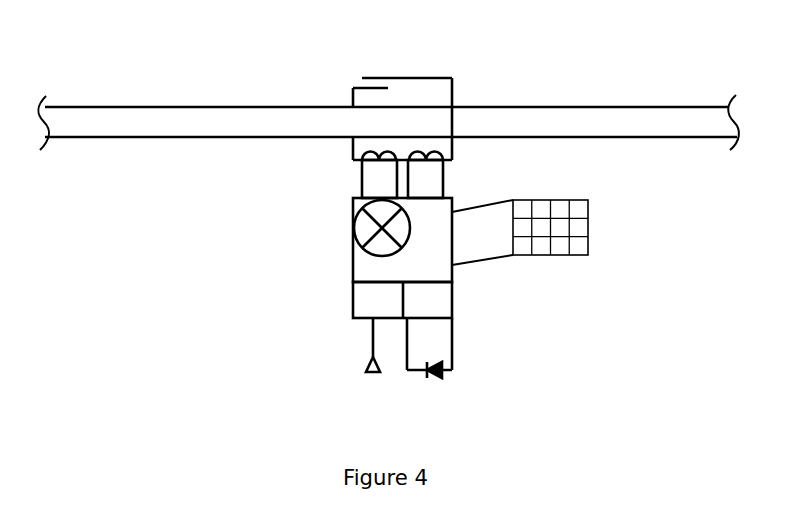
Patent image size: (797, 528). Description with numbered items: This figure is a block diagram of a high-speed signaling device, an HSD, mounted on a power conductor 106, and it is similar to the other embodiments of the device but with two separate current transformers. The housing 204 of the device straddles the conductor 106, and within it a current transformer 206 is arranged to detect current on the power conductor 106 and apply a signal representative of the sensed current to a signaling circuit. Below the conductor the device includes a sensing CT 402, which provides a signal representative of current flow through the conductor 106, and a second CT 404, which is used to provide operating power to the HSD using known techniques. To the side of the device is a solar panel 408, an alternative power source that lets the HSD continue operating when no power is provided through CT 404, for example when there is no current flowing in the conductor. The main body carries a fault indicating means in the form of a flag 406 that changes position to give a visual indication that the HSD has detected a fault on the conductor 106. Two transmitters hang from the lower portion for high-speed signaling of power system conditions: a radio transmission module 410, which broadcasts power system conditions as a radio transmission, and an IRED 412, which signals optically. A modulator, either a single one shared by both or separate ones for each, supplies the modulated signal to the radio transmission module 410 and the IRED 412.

The power conductor 106 is at (80, 107).
The housing 204 is at (405, 78).
The current transformer 206 is at (352, 145).
The sensing CT 402 is at (361, 178).
The CT 404 is at (444, 185).
The flag 406 is at (360, 222).
The solar panel 408 is at (588, 228).
The radio transmission module 410 is at (366, 360).
The IRED 412 is at (445, 373).